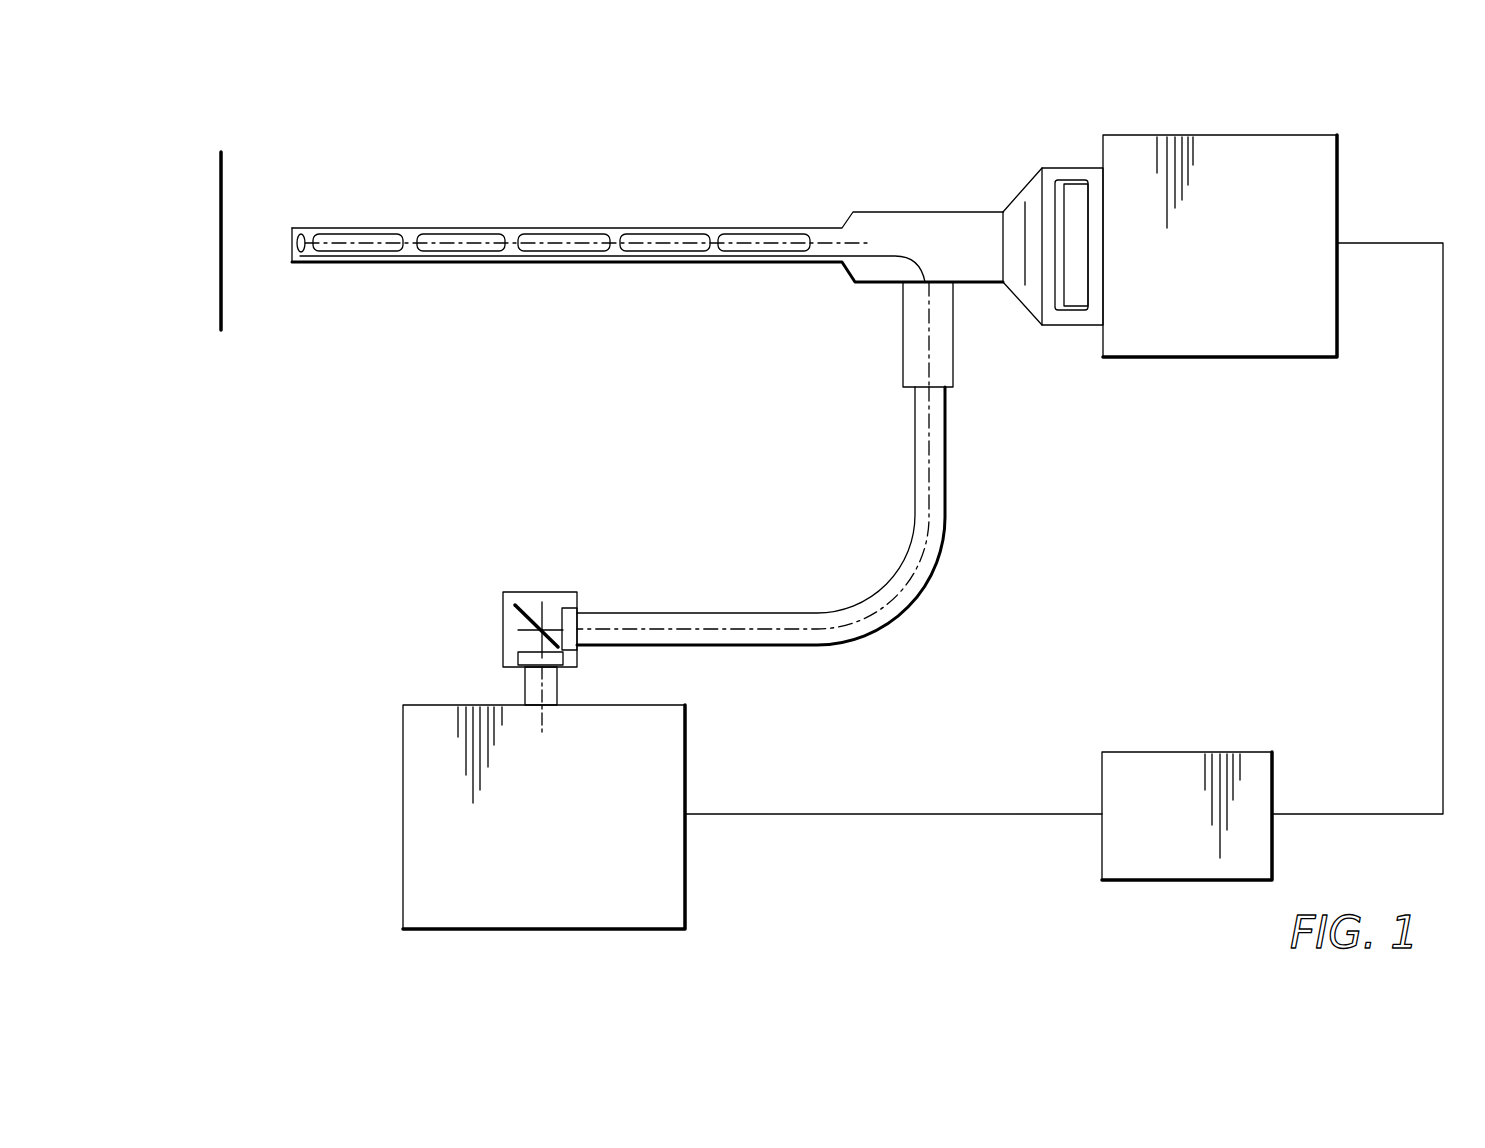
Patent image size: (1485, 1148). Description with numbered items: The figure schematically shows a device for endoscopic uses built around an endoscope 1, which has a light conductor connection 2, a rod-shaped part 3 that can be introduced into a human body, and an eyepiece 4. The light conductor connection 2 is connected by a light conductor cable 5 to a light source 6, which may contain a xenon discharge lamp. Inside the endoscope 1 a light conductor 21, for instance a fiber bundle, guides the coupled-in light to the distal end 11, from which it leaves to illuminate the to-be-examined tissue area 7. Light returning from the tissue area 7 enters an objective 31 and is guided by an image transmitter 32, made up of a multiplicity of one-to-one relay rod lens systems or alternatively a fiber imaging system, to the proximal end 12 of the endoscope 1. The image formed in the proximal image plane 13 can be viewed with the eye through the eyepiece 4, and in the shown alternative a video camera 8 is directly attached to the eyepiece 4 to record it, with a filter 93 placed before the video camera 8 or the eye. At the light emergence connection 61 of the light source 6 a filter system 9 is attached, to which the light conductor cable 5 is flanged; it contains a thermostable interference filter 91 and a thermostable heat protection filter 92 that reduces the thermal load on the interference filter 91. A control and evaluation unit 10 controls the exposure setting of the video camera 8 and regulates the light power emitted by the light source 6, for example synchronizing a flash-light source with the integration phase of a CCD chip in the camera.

The endoscope 1 is at (798, 208).
The light conductor connection 2 is at (910, 331).
The rod-shaped part 3 is at (455, 228).
The eyepiece 4 is at (1023, 187).
The light conductor cable 5 is at (897, 565).
The light source 6 is at (653, 870).
The tissue area 7 is at (222, 309).
The video camera 8 is at (1235, 165).
The filter system 9 is at (507, 618).
The control and evaluation unit 10 is at (1118, 848).
The distal end 11 is at (292, 228).
The proximal end 12 is at (1073, 166).
The proximal image plane 13 is at (1022, 270).
The light conductor 21 is at (668, 263).
The objective 31 is at (300, 264).
The image transmitter 32 is at (478, 252).
The light emergence connection 61 is at (560, 690).
The interference filter 91 is at (572, 606).
The heat protection filter 92 is at (520, 658).
The filter 93 is at (1070, 300).